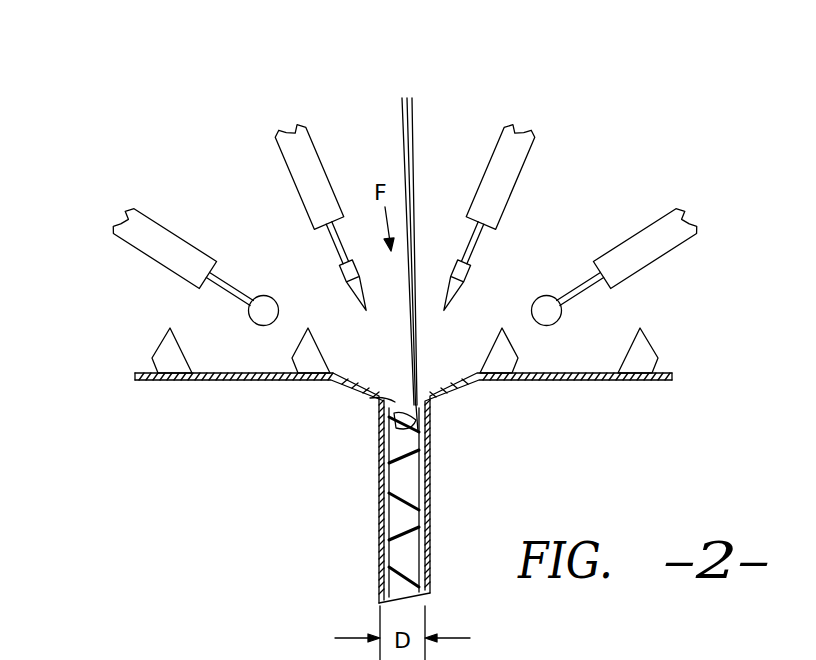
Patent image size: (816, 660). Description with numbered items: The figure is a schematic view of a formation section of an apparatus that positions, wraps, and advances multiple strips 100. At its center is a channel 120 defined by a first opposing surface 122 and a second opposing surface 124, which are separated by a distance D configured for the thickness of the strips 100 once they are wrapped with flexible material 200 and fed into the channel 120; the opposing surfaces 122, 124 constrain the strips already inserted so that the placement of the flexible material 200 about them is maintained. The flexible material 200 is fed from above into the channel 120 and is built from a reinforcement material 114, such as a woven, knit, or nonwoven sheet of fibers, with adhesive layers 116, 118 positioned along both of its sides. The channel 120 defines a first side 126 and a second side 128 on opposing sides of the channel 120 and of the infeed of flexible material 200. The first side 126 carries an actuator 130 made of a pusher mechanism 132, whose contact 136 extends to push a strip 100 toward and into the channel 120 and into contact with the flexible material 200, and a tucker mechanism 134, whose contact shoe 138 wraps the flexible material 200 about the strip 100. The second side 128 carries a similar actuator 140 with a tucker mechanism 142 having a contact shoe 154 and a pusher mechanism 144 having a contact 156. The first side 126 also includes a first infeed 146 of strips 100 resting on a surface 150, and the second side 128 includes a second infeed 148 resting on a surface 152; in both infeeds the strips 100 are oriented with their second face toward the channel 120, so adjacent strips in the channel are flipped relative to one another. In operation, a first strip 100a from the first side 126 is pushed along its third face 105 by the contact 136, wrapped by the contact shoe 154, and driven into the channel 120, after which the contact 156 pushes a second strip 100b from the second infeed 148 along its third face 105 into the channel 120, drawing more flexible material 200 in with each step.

The elongated strip 100 is at (175, 360).
The first strip 100a is at (322, 340).
The second strip 100b is at (518, 355).
The third face 105 is at (181, 326).
The reinforcement material 114 is at (400, 84).
The adhesive layer 116 is at (388, 150).
The adhesive layer 118 is at (430, 155).
The channel 120 is at (362, 523).
The first opposing surface 122 is at (396, 401).
The second opposing surface 124 is at (426, 462).
The first side 126 is at (94, 306).
The second side 128 is at (763, 305).
The actuator 130 is at (182, 137).
The pusher mechanism 132 is at (143, 227).
The tucker mechanism 134 is at (297, 163).
The contact 136 is at (264, 300).
The contact shoe 138 is at (347, 282).
The actuator 140 is at (632, 142).
The tucker mechanism 142 is at (507, 163).
The pusher mechanism 144 is at (663, 222).
The first infeed 146 is at (116, 347).
The second infeed 148 is at (702, 348).
The surface 150 is at (262, 382).
The surface 152 is at (623, 380).
The contact shoe 154 is at (480, 267).
The contact 156 is at (540, 300).
The flexible material 200 is at (435, 348).